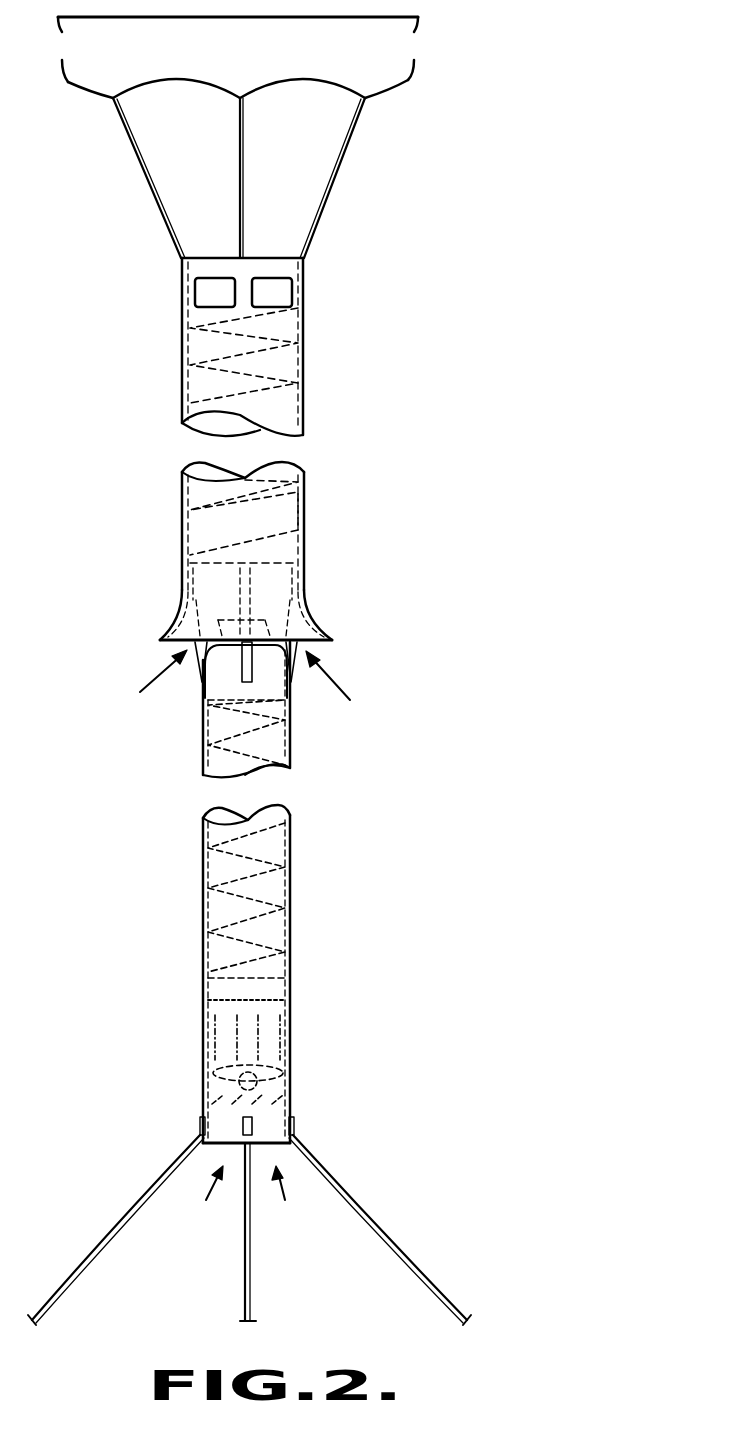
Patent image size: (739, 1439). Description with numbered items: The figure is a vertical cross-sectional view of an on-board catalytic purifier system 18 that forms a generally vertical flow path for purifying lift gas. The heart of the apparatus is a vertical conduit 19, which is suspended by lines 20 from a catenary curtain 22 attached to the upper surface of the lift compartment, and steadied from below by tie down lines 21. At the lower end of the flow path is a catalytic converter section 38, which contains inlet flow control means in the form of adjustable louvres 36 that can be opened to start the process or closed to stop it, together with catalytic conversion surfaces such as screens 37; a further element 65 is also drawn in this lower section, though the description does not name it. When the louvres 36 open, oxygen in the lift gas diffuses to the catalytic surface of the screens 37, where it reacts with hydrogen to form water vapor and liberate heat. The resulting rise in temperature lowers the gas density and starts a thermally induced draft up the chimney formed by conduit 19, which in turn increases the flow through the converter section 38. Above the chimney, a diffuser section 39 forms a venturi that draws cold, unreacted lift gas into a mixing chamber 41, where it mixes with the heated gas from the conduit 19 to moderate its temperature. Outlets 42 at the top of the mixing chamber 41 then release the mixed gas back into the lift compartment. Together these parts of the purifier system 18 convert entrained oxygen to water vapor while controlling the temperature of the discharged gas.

The on-board catalytic purifier system 18 is at (352, 786).
The vertical conduit chimney section 19 is at (193, 977).
The lines 20 is at (153, 182).
The tie down lines 21 is at (107, 1243).
The catenary curtain 22 is at (344, 63).
The adjustable louvres 36 is at (275, 1105).
The screens 37 is at (280, 1018).
The catalytic converter section 38 is at (190, 1143).
The diffuser section 39 is at (190, 702).
The mixing chamber 41 is at (165, 258).
The outlets 42 is at (210, 297).
The engine hook clips 65 is at (278, 1058).